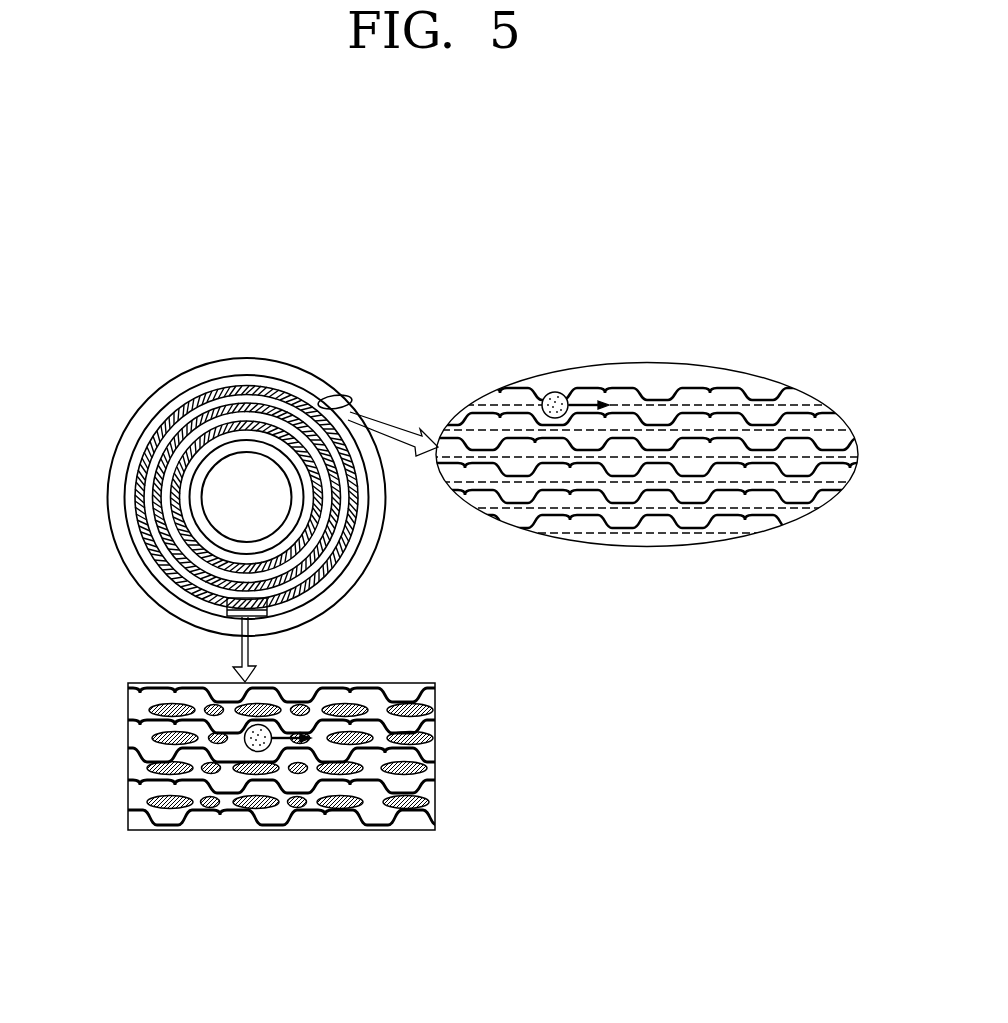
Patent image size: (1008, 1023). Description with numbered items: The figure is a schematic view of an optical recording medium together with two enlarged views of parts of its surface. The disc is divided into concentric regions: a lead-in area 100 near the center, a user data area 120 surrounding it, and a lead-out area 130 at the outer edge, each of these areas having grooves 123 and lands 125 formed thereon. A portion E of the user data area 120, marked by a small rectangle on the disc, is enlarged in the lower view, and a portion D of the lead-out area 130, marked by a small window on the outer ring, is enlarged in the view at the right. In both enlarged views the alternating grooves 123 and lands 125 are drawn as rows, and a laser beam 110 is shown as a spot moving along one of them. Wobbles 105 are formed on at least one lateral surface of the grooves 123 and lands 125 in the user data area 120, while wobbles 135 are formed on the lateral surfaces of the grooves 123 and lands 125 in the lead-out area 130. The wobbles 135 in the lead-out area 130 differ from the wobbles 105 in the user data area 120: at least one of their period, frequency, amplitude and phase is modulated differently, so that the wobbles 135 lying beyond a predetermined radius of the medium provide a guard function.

The lead-in area 100 is at (250, 443).
The wobbles 105 is at (367, 689).
The laser beam 110 is at (555, 392).
The user data area 120 is at (128, 489).
The grooves 123 is at (825, 410).
The lands 125 is at (842, 437).
The lead-out area 130 is at (212, 373).
The wobbles 135 is at (692, 388).
The portion of the lead-out area D is at (347, 400).
The portion of the user data area E is at (227, 612).